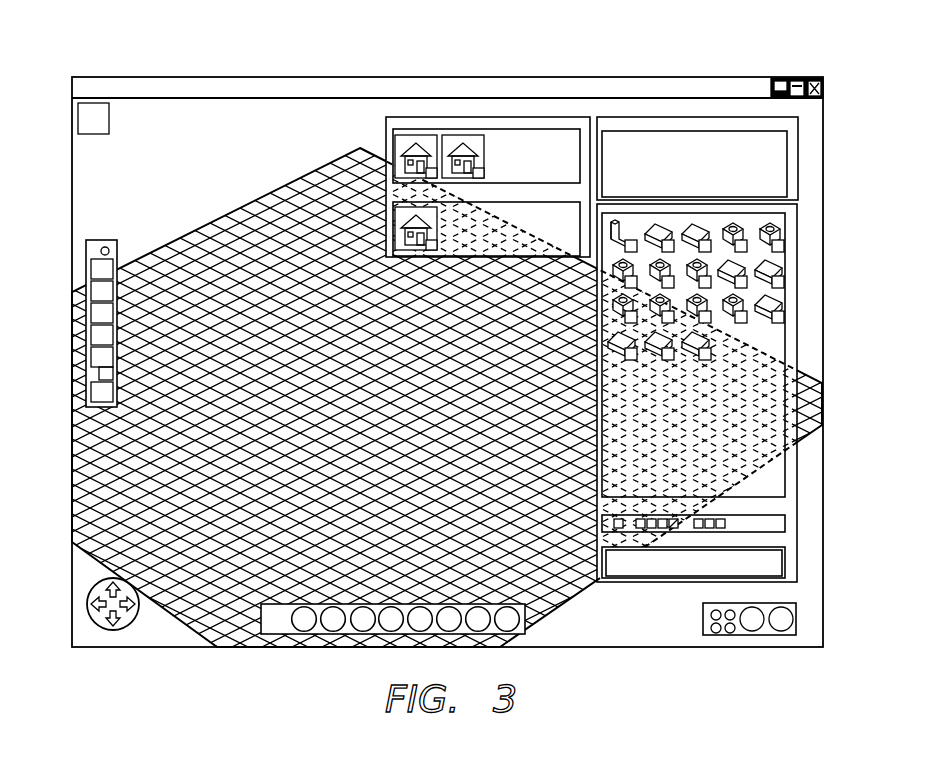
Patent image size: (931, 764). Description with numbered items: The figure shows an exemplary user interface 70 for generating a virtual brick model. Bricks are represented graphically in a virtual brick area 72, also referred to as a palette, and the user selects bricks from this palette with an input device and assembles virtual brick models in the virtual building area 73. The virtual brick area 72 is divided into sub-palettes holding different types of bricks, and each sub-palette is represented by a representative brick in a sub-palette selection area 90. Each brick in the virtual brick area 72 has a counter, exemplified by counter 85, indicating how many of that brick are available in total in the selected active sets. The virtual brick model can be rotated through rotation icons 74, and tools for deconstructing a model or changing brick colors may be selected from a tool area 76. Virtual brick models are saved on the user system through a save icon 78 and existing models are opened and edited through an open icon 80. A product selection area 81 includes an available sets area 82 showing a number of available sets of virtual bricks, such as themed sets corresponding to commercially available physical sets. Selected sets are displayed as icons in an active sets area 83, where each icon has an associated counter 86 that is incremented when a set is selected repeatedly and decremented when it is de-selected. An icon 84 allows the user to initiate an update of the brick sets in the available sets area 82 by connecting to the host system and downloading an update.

The user interface 70 is at (421, 55).
The product selection area 81 is at (447, 342).
The sub-palette selection area 90 is at (652, 128).
The available sets area 82 is at (387, 142).
The active sets area 83 is at (390, 228).
The counter 86 is at (433, 255).
The tool area 76 is at (129, 320).
The virtual building area 73 is at (377, 403).
The virtual brick area 72 is at (447, 397).
The counter 85 is at (659, 362).
The open icon 80 is at (303, 609).
The save icon 78 is at (393, 583).
The update icon 84 is at (478, 609).
The rotation icons 74 is at (116, 630).